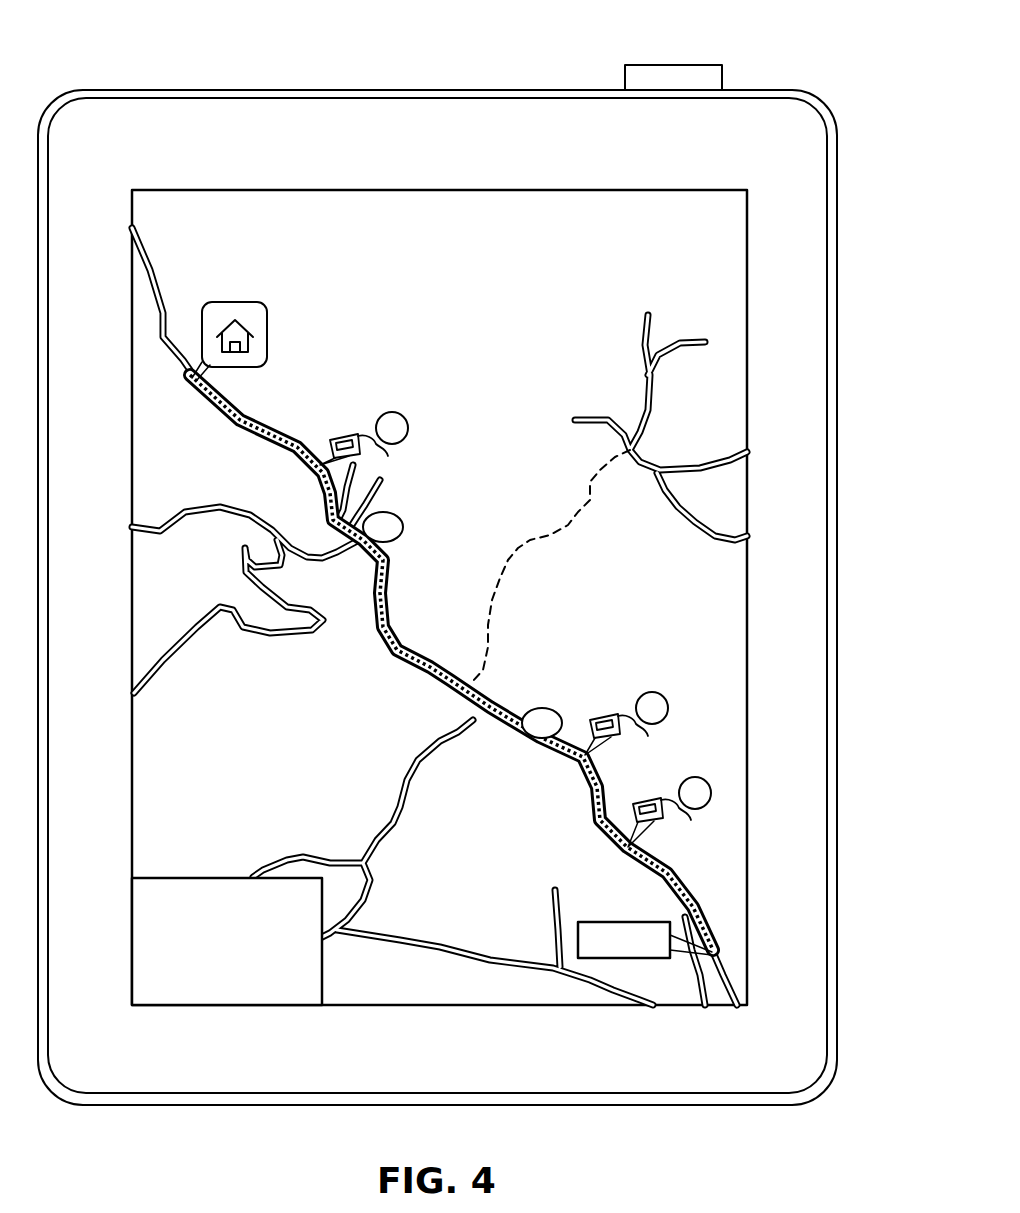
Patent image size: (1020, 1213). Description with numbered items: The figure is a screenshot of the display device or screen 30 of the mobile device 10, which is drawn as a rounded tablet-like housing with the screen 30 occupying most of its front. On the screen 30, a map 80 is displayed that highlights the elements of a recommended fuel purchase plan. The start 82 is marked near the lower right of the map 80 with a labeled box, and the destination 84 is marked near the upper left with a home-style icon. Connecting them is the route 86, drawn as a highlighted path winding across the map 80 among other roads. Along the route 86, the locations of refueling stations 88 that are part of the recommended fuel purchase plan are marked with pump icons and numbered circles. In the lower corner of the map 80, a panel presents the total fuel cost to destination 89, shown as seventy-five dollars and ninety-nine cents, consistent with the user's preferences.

The mobile device 10 is at (386, 88).
The display device or screen 30 is at (650, 189).
The map 80 is at (180, 462).
The start 82 is at (612, 921).
The destination 84 is at (268, 333).
The route 86 is at (388, 603).
The refueling stations 88 is at (392, 411).
The total fuel cost to destination 89 is at (215, 877).